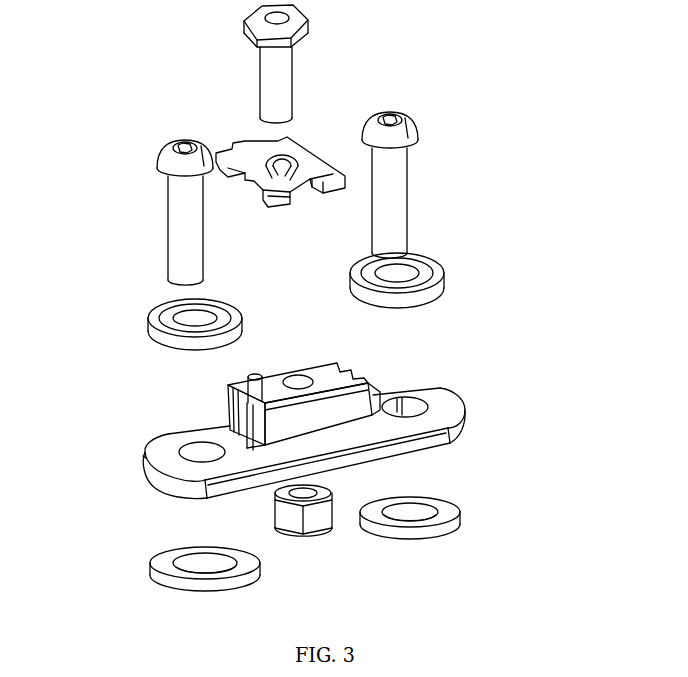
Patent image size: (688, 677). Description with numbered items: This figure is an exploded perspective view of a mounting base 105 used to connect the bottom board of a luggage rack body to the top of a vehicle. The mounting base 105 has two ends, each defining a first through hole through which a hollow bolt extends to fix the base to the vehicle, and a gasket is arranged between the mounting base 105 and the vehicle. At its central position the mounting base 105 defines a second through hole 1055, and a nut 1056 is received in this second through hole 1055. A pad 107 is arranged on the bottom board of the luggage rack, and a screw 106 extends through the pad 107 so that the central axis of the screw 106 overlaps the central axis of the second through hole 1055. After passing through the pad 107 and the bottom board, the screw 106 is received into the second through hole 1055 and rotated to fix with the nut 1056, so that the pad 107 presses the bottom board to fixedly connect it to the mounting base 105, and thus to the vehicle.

The mounting base 105 is at (351, 406).
The screw 106 is at (308, 24).
The pad 107 is at (278, 207).
The second through hole 1055 is at (296, 366).
The nut 1056 is at (310, 538).